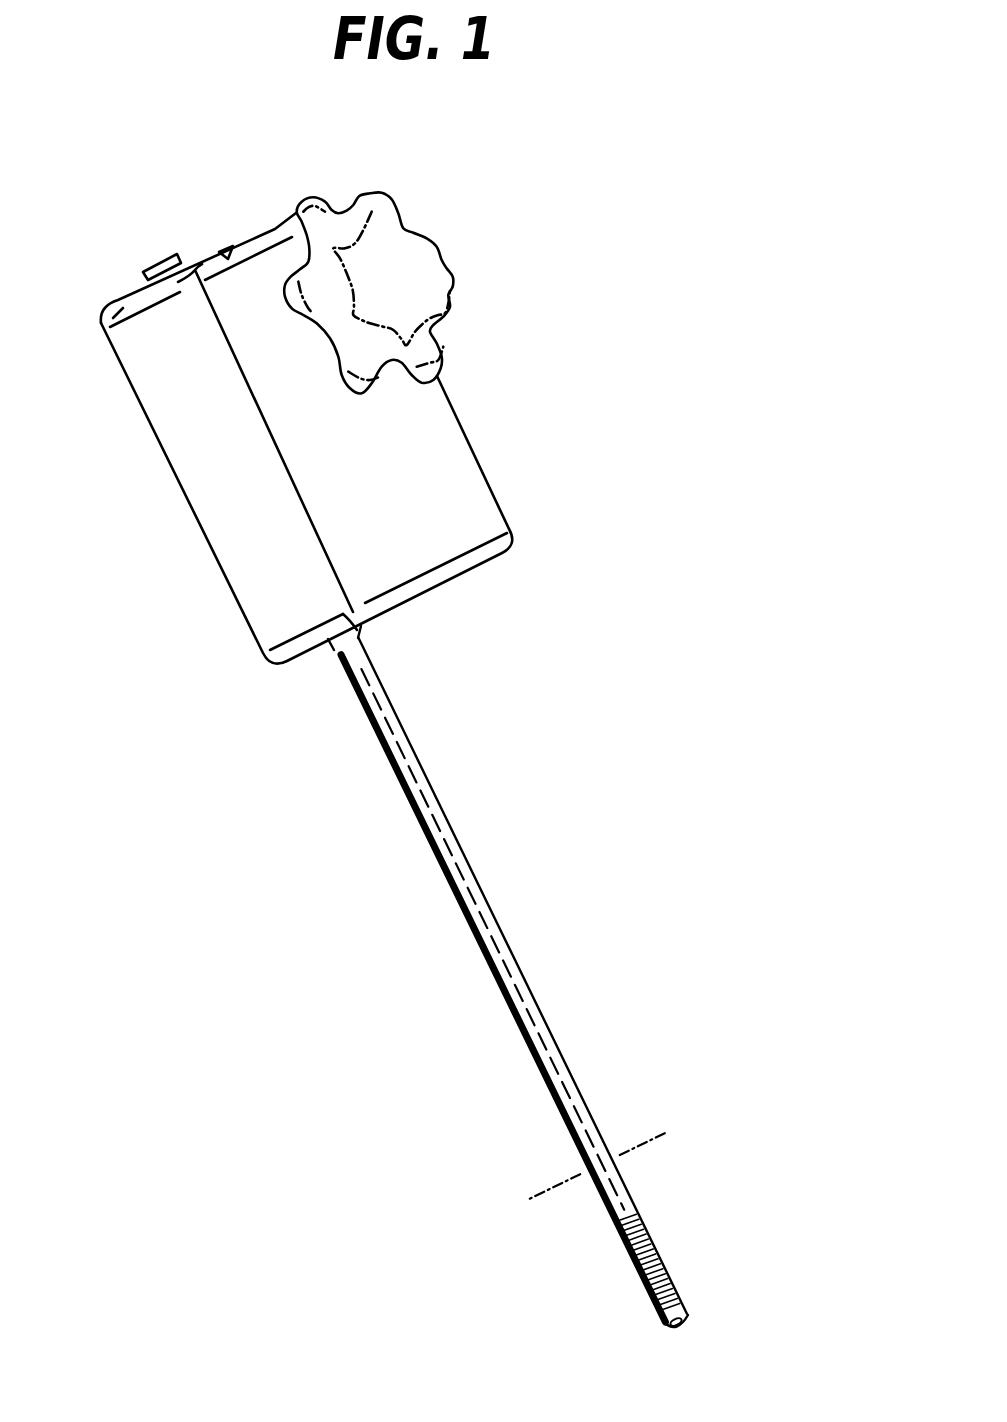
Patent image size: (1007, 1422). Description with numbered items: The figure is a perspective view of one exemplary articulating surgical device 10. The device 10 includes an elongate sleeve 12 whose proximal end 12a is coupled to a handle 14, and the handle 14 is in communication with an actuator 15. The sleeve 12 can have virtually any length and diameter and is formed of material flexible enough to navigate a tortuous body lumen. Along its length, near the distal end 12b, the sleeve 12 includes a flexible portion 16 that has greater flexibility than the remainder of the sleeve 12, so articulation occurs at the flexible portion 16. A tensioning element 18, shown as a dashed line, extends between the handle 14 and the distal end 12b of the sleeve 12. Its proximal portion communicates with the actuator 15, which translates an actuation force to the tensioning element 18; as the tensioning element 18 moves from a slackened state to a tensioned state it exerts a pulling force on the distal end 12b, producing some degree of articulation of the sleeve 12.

The device 10 is at (663, 255).
The elongate sleeve 12 is at (497, 923).
The proximal end 12a is at (370, 640).
The distal end 12b is at (568, 1313).
The handle 14 is at (500, 425).
The actuator 15 is at (400, 271).
The flexible portion 16 is at (657, 1210).
The tensioning element 18 is at (430, 823).